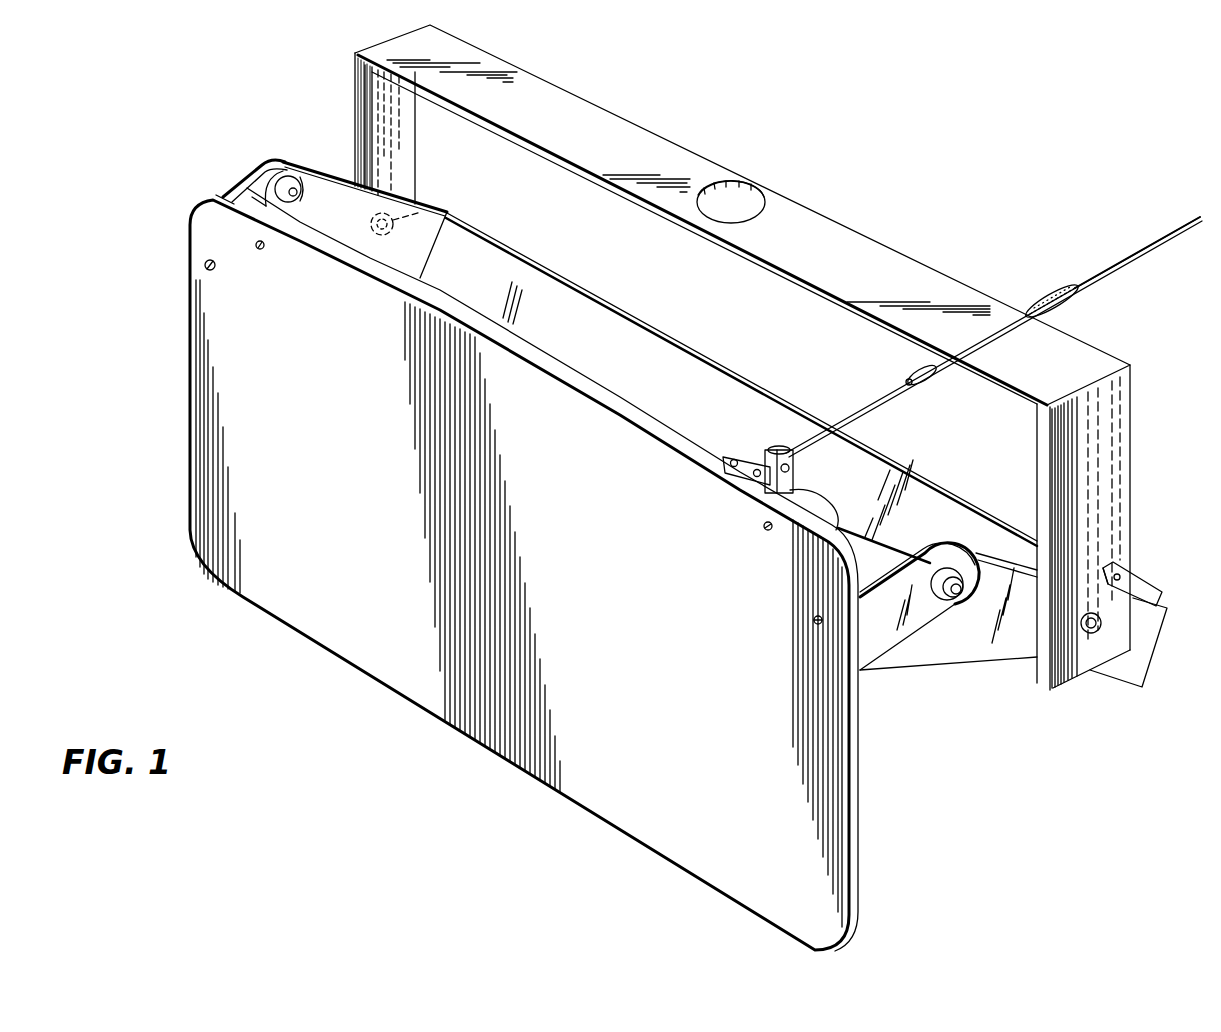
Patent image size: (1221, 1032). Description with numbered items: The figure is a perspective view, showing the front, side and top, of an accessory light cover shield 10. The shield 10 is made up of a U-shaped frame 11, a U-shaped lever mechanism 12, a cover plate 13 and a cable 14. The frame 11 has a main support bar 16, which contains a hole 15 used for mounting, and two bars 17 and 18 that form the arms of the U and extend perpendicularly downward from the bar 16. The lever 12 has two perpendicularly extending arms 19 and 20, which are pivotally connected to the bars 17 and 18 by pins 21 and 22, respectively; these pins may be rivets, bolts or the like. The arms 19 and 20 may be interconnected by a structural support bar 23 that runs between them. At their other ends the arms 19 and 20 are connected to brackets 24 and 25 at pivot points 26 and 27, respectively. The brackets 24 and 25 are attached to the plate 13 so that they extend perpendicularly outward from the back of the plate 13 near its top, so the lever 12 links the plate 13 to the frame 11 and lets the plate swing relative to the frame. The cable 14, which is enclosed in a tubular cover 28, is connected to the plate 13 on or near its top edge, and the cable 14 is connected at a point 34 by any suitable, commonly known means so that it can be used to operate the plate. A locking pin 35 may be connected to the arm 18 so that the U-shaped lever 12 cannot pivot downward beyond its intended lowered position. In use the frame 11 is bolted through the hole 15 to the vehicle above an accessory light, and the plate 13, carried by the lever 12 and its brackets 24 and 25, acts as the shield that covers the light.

The accessory light cover shield 10 is at (1147, 473).
The U-shaped frame 11 is at (1132, 369).
The U-shaped lever mechanism 12 is at (1003, 655).
The cover plate 13 is at (797, 876).
The cable 14 is at (1128, 256).
The hole 15 is at (739, 203).
The main support bar 16 is at (878, 266).
The bar 17 is at (372, 113).
The bar 18 is at (1113, 516).
The arm 19 is at (317, 187).
The arm 20 is at (950, 630).
The pin 21 is at (423, 213).
The pin 22 is at (1092, 634).
The structural support bar 23 is at (693, 367).
The bracket 24 is at (245, 177).
The bracket 25 is at (876, 655).
The pivot point 26 is at (277, 174).
The pivot point 27 is at (957, 594).
The tubular cover 28 is at (1052, 294).
The point 34 is at (790, 470).
The locking pin 35 is at (1146, 590).